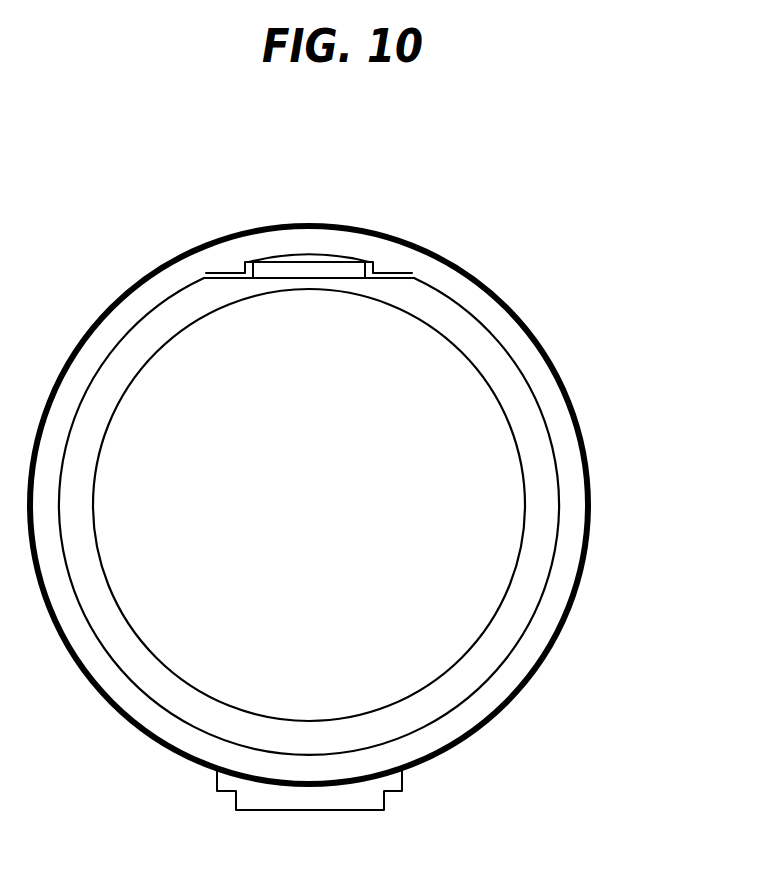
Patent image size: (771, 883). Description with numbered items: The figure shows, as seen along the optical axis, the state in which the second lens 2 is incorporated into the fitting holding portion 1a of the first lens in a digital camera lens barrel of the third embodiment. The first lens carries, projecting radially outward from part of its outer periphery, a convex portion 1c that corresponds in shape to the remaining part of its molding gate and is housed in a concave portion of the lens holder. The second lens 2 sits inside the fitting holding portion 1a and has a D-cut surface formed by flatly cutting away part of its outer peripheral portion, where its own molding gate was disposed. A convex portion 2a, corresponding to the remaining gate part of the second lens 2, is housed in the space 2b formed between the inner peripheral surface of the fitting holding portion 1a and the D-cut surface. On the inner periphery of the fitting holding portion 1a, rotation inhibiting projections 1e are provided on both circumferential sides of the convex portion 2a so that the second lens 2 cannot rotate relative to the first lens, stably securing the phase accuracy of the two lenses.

The fitting holding portion 1a is at (525, 342).
The convex portion 1c is at (357, 803).
The rotation inhibiting projections 1e is at (237, 270).
The second lens 2 is at (457, 573).
The convex portion 2a is at (302, 270).
The space 2b is at (313, 259).